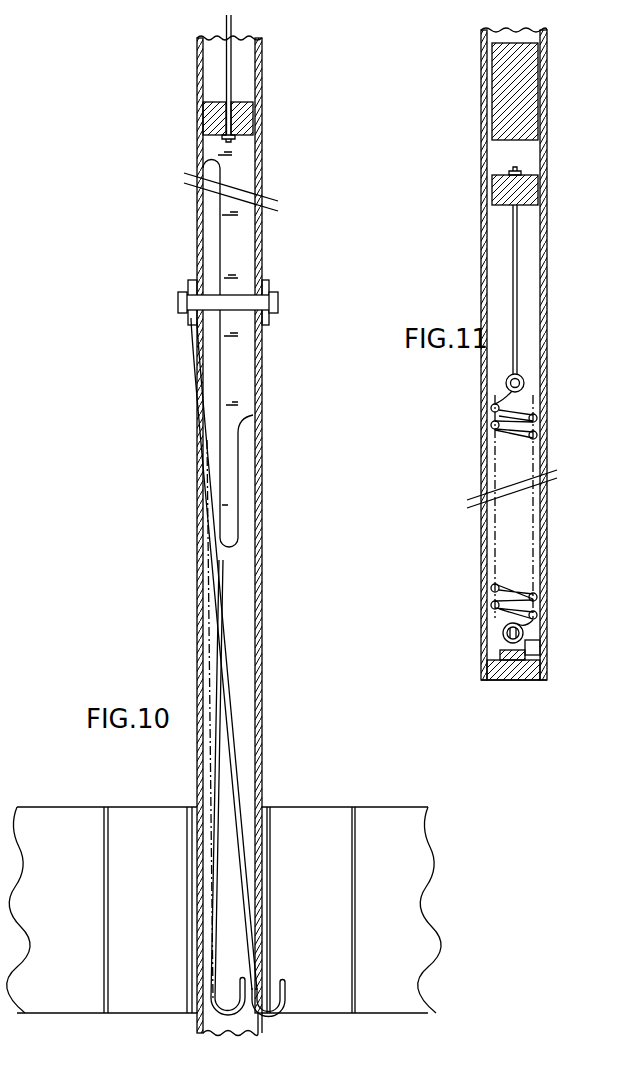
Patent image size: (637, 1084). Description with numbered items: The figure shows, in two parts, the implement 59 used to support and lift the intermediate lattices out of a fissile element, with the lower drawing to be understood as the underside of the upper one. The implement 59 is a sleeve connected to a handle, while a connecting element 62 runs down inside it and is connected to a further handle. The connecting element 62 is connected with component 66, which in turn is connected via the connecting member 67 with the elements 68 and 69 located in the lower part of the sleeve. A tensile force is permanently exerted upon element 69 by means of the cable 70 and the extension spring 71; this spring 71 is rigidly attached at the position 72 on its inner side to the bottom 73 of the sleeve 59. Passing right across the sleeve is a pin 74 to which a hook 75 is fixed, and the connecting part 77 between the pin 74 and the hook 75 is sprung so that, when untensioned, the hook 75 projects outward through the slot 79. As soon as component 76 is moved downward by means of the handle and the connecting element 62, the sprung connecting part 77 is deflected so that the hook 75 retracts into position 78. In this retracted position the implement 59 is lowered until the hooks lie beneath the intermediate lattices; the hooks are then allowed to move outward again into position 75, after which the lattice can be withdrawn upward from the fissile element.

In FIG. 10, the implement 59 is at (263, 86).
In FIG. 10, the connecting element 62 is at (226, 63).
In FIG. 10, the component 66 is at (250, 124).
In FIG. 10, the connecting member 67 is at (243, 566).
In FIG. 11, the upper element 68 is at (530, 112).
In FIG. 11, the lower element 69 is at (540, 190).
In FIG. 11, the cable 70 is at (520, 296).
In FIG. 11, the extension spring 71 is at (526, 530).
In FIG. 11, the attachment position 72 is at (527, 640).
In FIG. 11, the bottom of sleeve 73 is at (500, 680).
In FIG. 10, the pin 74 is at (245, 303).
In FIG. 10, the hook 75 is at (288, 995).
In FIG. 10, the component 76 is at (239, 490).
In FIG. 10, the connecting part 77 is at (234, 750).
In FIG. 10, the retracted hook position 78 is at (229, 1017).
In FIG. 10, the slot 79 is at (265, 799).